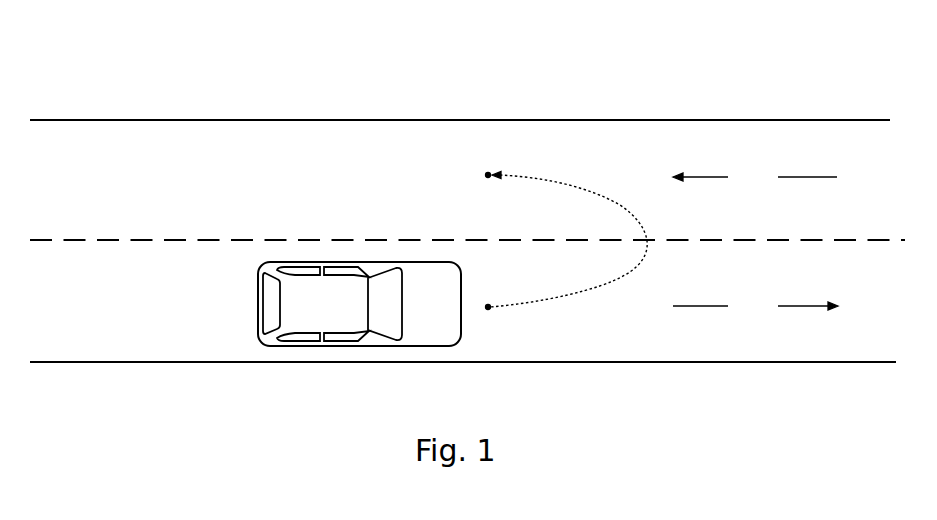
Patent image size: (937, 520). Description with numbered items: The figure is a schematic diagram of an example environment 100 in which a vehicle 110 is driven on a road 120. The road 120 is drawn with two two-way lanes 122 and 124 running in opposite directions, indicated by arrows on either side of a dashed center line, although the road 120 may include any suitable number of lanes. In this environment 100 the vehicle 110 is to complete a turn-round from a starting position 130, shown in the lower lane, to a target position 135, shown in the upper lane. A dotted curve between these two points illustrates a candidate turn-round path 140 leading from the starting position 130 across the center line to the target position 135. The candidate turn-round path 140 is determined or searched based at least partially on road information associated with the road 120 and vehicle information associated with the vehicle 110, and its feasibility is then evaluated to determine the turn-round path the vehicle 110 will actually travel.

The environment 100 is at (402, 66).
The vehicle 110 is at (257, 282).
The road 120 is at (72, 164).
The lane 122 is at (755, 307).
The lane 124 is at (755, 178).
The starting position 130 is at (488, 325).
The target position 135 is at (474, 176).
The candidate turn-round path 140 is at (568, 241).